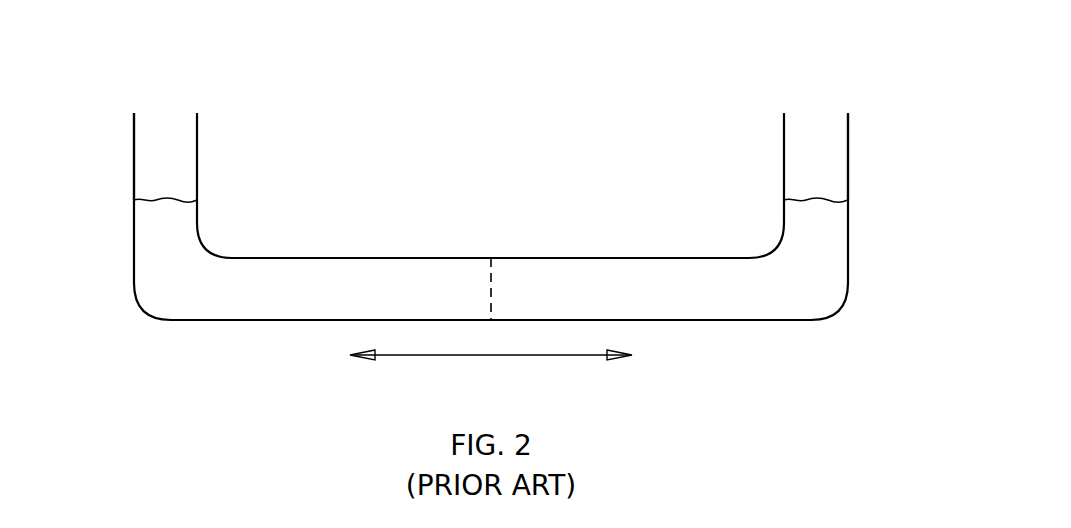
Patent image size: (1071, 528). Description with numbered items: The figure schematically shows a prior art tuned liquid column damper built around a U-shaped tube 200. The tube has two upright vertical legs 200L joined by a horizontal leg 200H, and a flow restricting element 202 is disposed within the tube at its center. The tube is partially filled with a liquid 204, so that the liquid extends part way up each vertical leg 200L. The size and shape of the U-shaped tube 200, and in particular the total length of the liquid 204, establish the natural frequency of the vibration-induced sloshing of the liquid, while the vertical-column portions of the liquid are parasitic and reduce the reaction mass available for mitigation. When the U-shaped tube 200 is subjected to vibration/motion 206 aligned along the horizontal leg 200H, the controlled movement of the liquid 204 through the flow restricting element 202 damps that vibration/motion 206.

The U-shaped tube 200 is at (283, 226).
The vertical leg 200L is at (134, 177).
The horizontal leg 200H is at (410, 257).
The flow restricting element 202 is at (492, 266).
The liquid 204 is at (168, 198).
The vibration/motion 206 is at (415, 356).